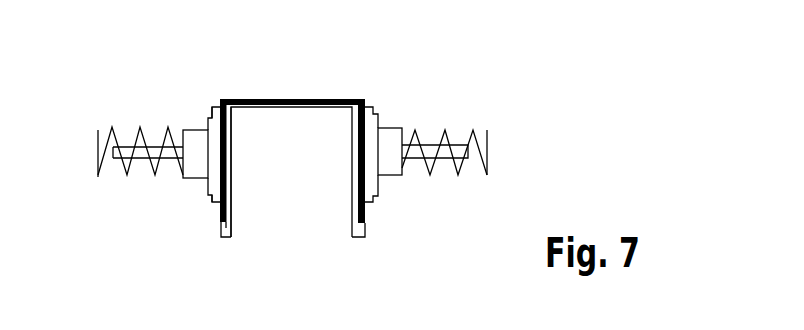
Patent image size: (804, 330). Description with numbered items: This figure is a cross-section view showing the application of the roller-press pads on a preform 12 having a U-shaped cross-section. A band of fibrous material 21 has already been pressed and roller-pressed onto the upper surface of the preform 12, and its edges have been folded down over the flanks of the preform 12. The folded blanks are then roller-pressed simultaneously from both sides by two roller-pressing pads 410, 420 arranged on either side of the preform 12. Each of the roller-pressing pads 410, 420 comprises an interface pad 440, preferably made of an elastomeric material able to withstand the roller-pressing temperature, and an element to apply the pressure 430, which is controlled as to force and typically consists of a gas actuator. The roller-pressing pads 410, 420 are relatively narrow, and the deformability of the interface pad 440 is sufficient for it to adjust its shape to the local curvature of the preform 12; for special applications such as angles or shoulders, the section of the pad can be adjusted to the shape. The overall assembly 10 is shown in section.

The frame body 10 is at (227, 238).
The preform 12 is at (232, 213).
The band of fibrous material 21 is at (307, 99).
The roller-pressing pad 410 is at (451, 197).
The roller-pressing pad 420 is at (140, 178).
The element to apply the pressure 430 is at (425, 150).
The interface pad 440 is at (365, 201).